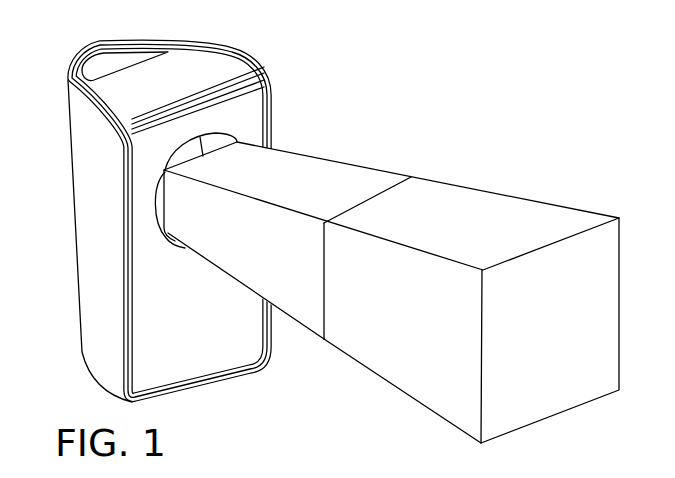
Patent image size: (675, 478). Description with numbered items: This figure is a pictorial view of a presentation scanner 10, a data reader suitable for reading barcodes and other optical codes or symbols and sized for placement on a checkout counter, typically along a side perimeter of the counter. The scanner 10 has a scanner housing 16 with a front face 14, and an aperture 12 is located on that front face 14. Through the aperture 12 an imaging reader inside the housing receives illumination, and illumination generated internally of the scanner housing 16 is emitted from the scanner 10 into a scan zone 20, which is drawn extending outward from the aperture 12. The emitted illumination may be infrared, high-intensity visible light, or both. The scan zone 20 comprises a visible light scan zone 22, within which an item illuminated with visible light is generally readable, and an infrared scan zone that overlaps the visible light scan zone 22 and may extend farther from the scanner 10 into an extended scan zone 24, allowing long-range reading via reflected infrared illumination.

The presentation scanner 10 is at (213, 63).
The aperture 12 is at (215, 137).
The front face 14 is at (187, 357).
The scanner housing 16 is at (97, 322).
The scan zone 20 is at (262, 141).
The visible light scan zone 22 is at (163, 242).
The extended scan zone 24 is at (321, 348).